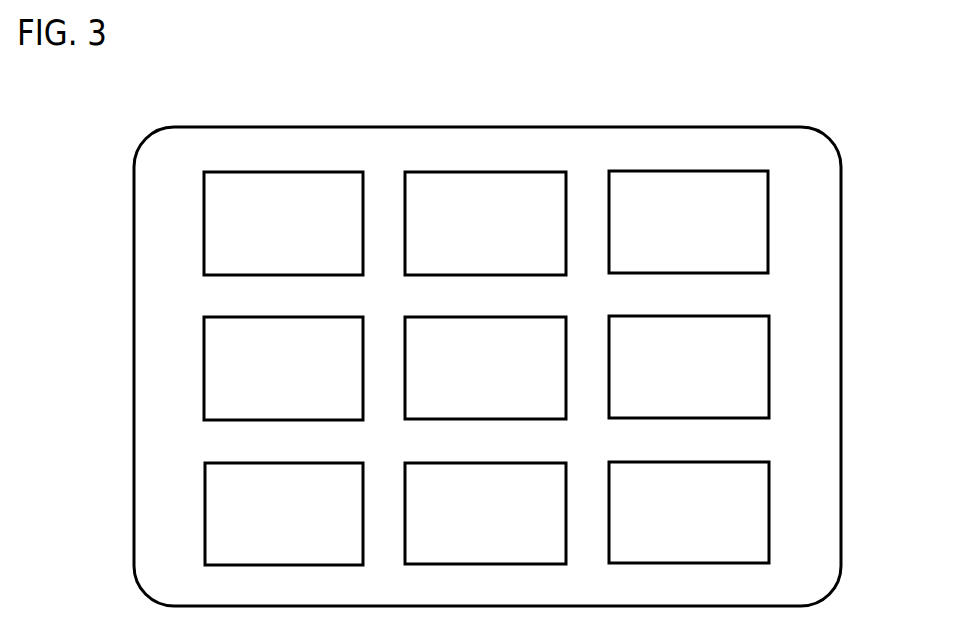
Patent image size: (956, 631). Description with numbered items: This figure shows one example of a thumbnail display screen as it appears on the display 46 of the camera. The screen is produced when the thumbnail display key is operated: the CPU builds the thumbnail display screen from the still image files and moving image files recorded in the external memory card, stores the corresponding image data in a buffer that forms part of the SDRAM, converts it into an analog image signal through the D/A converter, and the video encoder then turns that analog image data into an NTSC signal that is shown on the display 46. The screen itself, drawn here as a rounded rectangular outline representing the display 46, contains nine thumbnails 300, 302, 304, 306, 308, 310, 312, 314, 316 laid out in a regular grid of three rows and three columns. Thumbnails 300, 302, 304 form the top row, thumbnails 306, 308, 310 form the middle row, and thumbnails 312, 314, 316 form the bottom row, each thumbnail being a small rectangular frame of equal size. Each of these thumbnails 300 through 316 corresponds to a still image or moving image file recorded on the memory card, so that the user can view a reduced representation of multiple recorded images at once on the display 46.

The display 46 is at (622, 127).
The thumbnail 300 is at (273, 172).
The thumbnail 302 is at (473, 172).
The thumbnail 304 is at (677, 171).
The thumbnail 306 is at (273, 317).
The thumbnail 308 is at (473, 317).
The thumbnail 310 is at (677, 316).
The thumbnail 312 is at (273, 463).
The thumbnail 314 is at (473, 463).
The thumbnail 316 is at (677, 462).